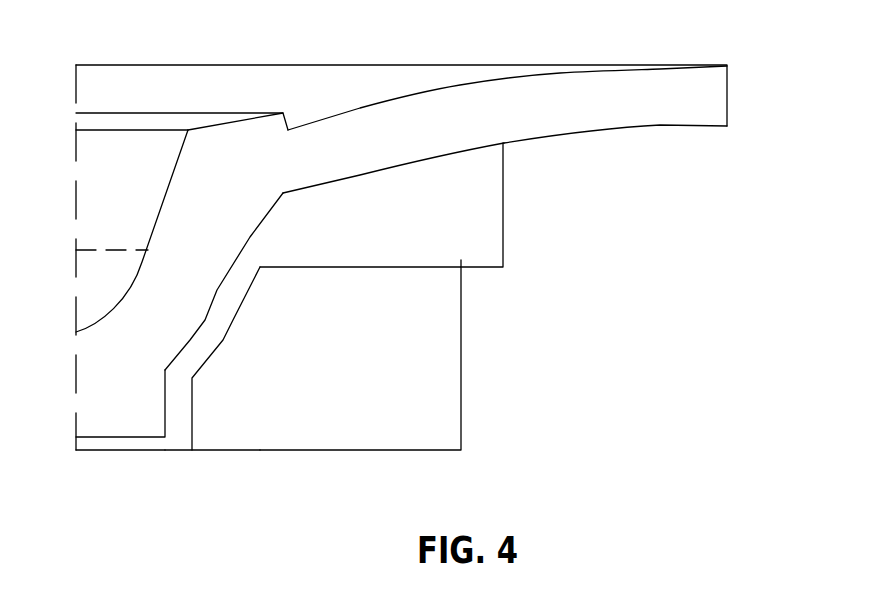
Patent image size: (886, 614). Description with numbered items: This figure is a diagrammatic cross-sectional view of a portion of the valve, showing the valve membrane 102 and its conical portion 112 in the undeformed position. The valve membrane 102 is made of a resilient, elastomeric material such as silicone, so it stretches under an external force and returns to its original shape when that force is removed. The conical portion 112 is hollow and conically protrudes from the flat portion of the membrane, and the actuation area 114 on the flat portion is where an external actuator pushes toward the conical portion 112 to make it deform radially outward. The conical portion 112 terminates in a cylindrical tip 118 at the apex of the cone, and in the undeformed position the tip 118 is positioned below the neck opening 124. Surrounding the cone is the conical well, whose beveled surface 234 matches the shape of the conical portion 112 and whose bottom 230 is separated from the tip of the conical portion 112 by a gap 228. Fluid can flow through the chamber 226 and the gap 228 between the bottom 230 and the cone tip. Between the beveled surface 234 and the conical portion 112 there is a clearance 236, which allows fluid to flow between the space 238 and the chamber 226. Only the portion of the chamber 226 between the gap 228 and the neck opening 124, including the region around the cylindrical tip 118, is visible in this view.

The valve membrane 102 is at (667, 83).
The conical portion 112 is at (173, 237).
The actuation area 114 is at (232, 117).
The cylindrical tip 118 is at (102, 418).
The neck opening 124 is at (253, 262).
The chamber 226 is at (182, 437).
The gap 228 is at (118, 443).
The bottom 230 is at (430, 413).
The beveled surface 234 is at (243, 310).
The clearance 236 is at (218, 322).
The space 238 is at (470, 182).